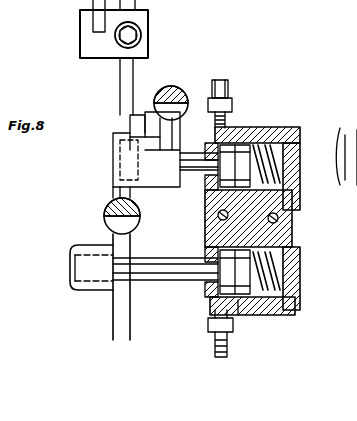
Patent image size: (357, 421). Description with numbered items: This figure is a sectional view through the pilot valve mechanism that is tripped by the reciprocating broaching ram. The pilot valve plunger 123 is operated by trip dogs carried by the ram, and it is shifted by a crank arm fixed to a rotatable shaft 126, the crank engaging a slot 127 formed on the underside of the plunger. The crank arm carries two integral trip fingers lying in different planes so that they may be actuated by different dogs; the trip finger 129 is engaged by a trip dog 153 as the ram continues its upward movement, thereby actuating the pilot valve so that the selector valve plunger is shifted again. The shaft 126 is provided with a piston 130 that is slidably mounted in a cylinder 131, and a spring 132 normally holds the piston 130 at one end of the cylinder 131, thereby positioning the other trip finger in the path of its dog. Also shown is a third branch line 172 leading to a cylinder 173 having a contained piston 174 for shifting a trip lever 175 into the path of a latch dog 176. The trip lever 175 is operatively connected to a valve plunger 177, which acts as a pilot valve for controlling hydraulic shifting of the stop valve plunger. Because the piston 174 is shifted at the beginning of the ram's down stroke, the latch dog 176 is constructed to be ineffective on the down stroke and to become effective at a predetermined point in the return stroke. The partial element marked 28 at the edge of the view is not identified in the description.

The latch dog 176 is at (80, 41).
The trip finger 129 is at (140, 112).
The plunger 123 is at (185, 98).
The slot 127 is at (195, 106).
The piston 130 is at (258, 127).
The cylinder 131 is at (268, 127).
The spring 132 is at (280, 126).
The valve body 28 is at (281, 192).
The cylinder 173 is at (268, 312).
The piston 174 is at (238, 316).
The third branch line 172 is at (214, 340).
The valve plunger 177 is at (140, 224).
The trip lever 175 is at (110, 234).
The trip dog 153 is at (116, 182).
The rotatable shaft 126 is at (183, 178).